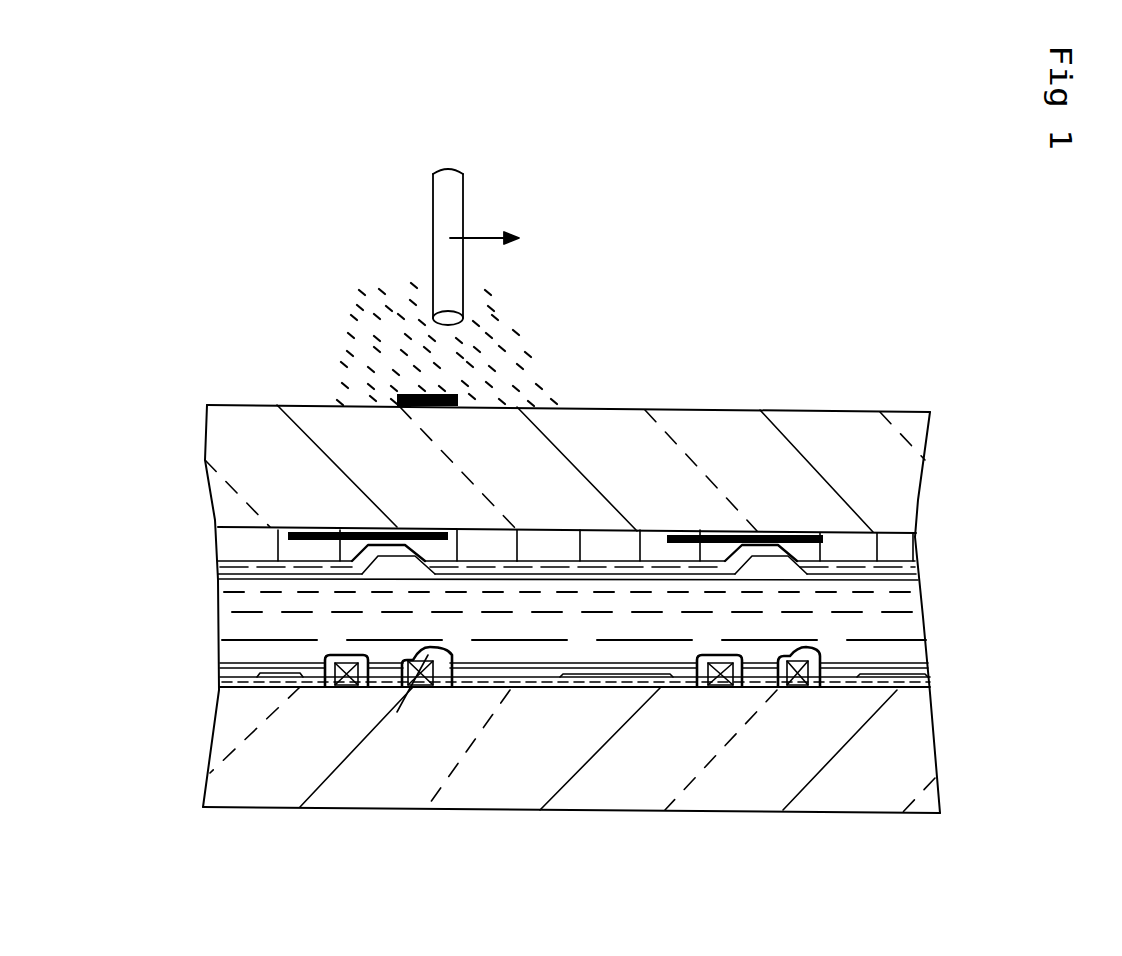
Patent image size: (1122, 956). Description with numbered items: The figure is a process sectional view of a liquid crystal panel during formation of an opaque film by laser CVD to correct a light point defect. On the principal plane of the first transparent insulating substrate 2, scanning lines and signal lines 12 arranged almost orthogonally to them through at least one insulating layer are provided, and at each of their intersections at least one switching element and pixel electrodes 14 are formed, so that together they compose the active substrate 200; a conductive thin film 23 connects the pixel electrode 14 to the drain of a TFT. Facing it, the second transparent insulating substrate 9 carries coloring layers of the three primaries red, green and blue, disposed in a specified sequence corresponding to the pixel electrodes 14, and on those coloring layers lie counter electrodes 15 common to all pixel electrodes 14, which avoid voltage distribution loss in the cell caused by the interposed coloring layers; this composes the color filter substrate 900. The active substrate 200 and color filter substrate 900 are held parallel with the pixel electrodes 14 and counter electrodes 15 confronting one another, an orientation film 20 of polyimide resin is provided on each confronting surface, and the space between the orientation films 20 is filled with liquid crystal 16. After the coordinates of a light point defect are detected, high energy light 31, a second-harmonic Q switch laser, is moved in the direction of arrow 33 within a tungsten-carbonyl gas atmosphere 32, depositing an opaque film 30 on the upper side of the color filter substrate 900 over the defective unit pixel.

The first transparent insulating substrate 2 is at (613, 768).
The second transparent insulating substrate 9 is at (767, 457).
The signal lines 12 is at (347, 690).
The pixel electrodes 14 is at (515, 690).
The counter electrodes 15 is at (215, 562).
The liquid crystal 16 is at (267, 642).
The orientation film 20 is at (875, 582).
The conductive thin film 23 is at (416, 690).
The opaque film 30 is at (460, 398).
The high energy light 31 is at (460, 172).
The tungsten-carbonyl gas atmosphere 32 is at (517, 315).
The arrow 33 is at (480, 238).
The active substrate 200 is at (943, 743).
The color filter substrate 900 is at (933, 510).